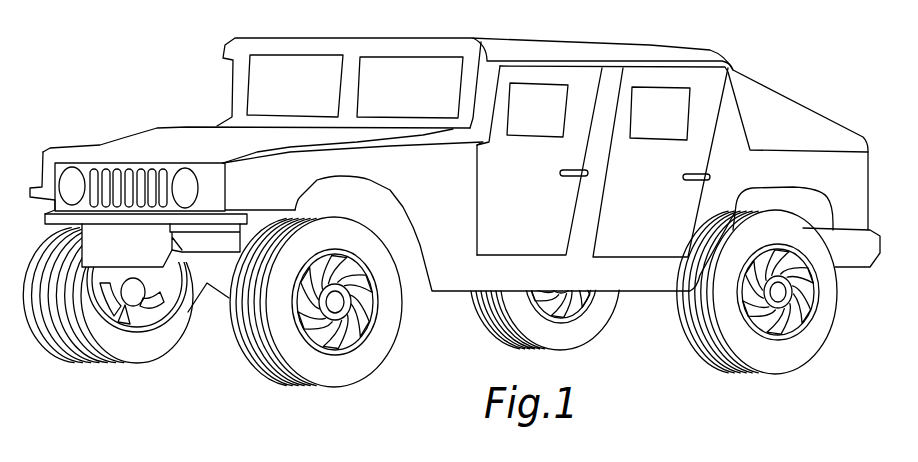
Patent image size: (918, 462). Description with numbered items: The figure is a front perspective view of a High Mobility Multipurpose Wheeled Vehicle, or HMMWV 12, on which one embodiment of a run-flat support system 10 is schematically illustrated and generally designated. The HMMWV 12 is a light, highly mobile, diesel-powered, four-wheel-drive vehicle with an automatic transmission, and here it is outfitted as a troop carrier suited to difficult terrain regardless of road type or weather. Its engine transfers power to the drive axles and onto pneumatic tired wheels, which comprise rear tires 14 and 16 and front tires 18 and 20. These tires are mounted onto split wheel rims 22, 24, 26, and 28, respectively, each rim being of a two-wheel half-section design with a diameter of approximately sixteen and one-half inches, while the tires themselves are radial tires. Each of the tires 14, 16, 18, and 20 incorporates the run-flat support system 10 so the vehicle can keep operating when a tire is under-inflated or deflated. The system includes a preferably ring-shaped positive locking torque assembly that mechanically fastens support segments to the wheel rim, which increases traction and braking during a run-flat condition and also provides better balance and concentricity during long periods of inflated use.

The run-flat support system 10 is at (238, 388).
The HMMWV 12 is at (756, 62).
The rear tire 14 is at (577, 340).
The rear tire 16 is at (788, 355).
The front tire 18 is at (138, 352).
The front tire 20 is at (353, 378).
The split wheel rim 22 is at (583, 300).
The split wheel rim 24 is at (797, 282).
The split wheel rim 26 is at (160, 313).
The split wheel rim 28 is at (357, 299).